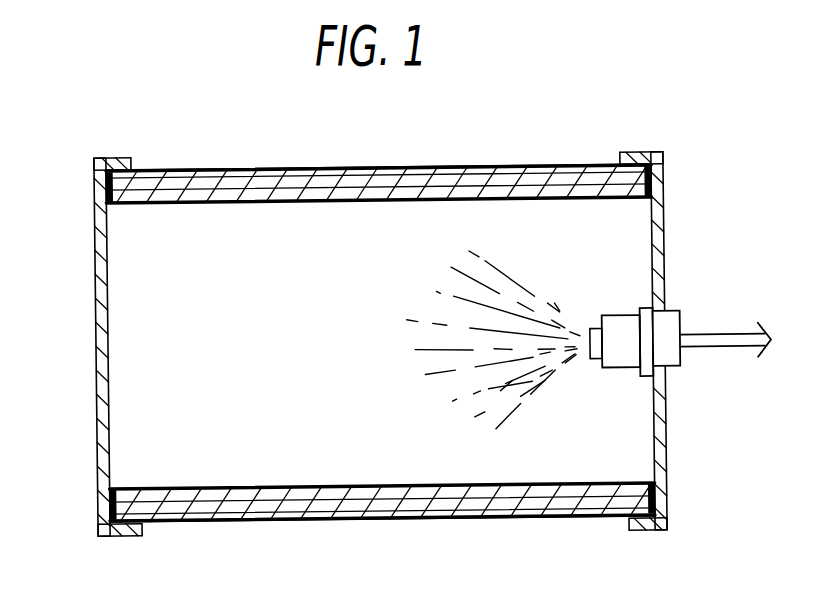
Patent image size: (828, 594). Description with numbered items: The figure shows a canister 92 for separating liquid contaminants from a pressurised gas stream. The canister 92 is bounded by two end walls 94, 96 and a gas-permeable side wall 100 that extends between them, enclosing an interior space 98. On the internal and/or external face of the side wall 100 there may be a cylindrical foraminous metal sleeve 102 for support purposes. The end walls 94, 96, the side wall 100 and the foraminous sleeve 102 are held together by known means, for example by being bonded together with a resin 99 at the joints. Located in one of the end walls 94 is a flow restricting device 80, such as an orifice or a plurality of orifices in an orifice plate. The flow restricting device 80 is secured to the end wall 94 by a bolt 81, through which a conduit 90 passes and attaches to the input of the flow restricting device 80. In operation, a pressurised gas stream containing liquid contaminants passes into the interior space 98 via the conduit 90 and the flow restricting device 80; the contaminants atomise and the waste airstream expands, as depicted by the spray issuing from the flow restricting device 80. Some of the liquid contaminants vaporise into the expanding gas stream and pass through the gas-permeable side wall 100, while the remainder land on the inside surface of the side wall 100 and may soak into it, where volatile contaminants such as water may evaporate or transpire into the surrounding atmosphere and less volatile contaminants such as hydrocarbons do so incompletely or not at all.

The flow restricting device 80 is at (597, 363).
The bolt 81 is at (666, 353).
The conduit 90 is at (710, 338).
The canister 92 is at (530, 154).
The end wall 94 is at (667, 228).
The end wall 96 is at (95, 238).
The interior space 98 is at (272, 360).
The resin 99 is at (95, 193).
The side wall 100 is at (385, 178).
The foraminous metal sleeve 102 is at (278, 166).